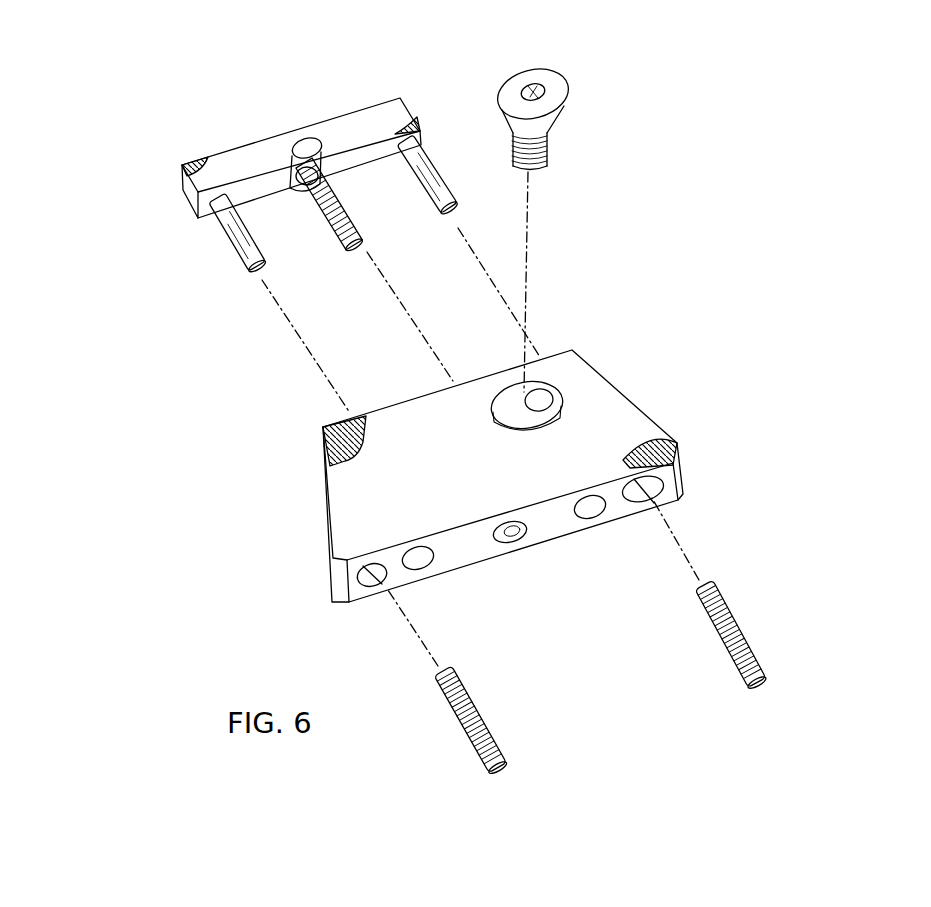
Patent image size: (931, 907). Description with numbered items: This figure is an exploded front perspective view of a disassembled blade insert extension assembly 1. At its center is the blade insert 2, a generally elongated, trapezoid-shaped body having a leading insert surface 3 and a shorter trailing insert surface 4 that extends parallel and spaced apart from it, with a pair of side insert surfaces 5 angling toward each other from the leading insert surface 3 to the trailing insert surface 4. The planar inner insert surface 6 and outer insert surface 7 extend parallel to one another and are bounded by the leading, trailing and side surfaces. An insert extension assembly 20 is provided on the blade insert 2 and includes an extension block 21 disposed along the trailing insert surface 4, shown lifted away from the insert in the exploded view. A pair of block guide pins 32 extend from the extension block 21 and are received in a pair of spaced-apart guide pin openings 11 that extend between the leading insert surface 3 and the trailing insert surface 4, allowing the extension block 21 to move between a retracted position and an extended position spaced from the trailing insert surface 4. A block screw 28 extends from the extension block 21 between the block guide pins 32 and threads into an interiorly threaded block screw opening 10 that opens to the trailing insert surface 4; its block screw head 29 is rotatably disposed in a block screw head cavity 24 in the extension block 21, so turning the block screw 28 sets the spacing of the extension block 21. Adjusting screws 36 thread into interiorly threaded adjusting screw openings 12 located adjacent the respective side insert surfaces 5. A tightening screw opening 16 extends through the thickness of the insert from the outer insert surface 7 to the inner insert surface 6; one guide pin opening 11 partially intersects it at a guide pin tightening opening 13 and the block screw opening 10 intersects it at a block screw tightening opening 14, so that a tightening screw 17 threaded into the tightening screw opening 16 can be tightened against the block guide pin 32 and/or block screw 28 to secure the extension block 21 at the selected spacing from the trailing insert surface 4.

The blade insert extension assembly 1 is at (106, 183).
The blade insert 2 is at (630, 386).
The leading insert surface 3 is at (482, 552).
The trailing insert surface 4 is at (385, 403).
The side insert surfaces 5 is at (322, 486).
The inner insert surface 6 is at (382, 604).
The outer insert surface 7 is at (362, 512).
The block screw opening 10 is at (537, 536).
The guide pin openings 11 is at (415, 572).
The adjusting screw opening 12 is at (362, 600).
The guide pin tightening opening 13 is at (556, 394).
The block screw tightening opening 14 is at (493, 412).
The tightening screw opening 16 is at (491, 421).
The tightening screw 17 is at (570, 88).
The insert extension assembly 20 is at (370, 100).
The extension block 21 is at (224, 152).
The block screw head cavity 24 is at (293, 146).
The block screw 28 is at (348, 250).
The block screw head 29 is at (287, 172).
The block guide pin 32 is at (227, 250).
The adjusting screw 36 is at (488, 766).